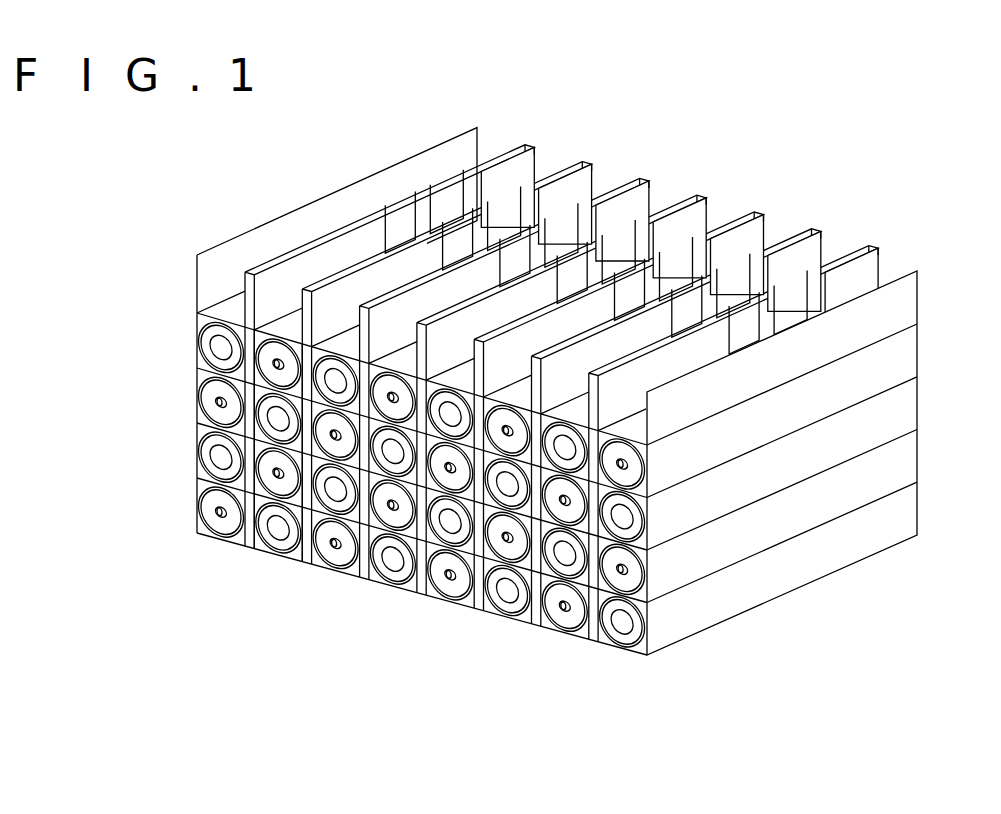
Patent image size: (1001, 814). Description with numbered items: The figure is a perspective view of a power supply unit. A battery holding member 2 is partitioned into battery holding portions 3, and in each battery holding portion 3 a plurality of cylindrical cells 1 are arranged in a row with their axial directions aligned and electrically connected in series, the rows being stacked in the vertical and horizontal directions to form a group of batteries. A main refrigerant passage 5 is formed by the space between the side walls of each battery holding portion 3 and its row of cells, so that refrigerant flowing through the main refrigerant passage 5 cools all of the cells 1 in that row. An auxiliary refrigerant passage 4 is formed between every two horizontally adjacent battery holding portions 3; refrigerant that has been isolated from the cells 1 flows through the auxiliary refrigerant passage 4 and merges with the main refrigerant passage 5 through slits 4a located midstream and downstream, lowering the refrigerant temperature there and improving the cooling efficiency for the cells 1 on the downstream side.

The cylindrical cell 1 is at (375, 583).
The battery holding member 2 is at (738, 587).
The battery holding portion 3 is at (355, 258).
The auxiliary refrigerant passage 4 is at (427, 343).
The slit 4a is at (803, 287).
The main refrigerant passage 5 is at (288, 556).